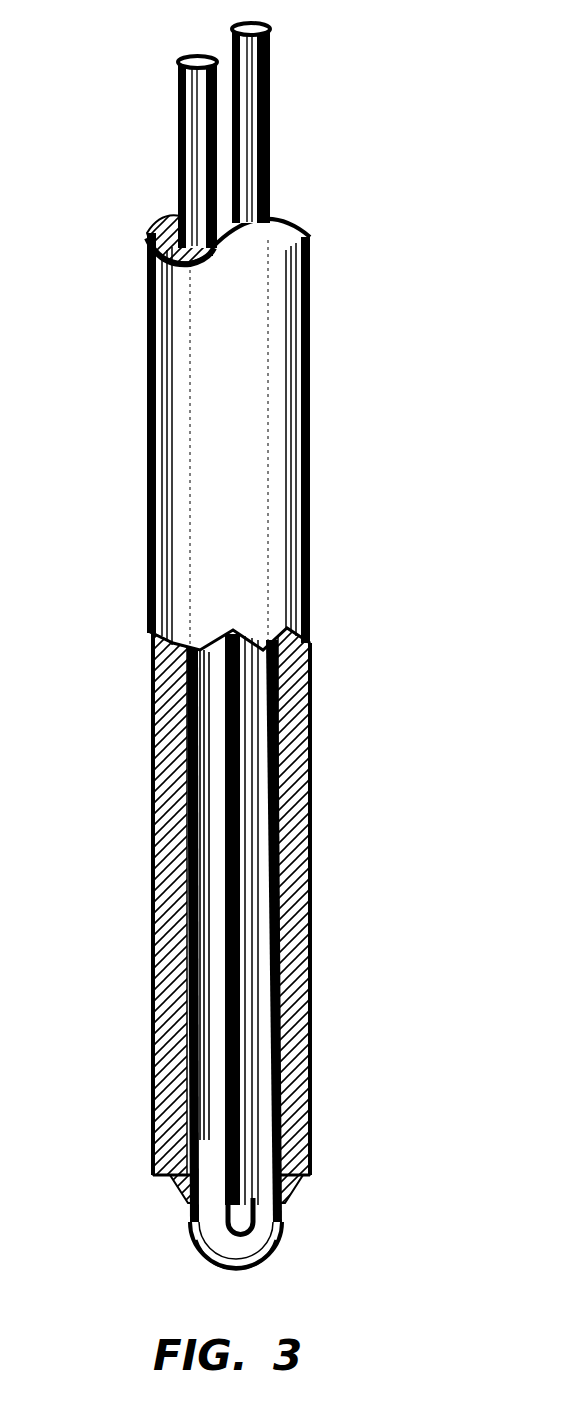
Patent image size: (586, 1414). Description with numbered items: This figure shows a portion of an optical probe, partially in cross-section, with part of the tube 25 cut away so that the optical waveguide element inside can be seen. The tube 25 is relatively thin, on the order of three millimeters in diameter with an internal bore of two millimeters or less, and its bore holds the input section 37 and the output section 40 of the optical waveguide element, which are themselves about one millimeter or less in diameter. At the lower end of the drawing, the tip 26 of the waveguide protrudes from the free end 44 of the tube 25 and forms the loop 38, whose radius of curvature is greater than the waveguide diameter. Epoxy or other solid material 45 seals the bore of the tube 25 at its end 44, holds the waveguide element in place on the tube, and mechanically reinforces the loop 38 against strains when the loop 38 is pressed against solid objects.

The tube 25 is at (150, 470).
The tip 26 is at (274, 1266).
The input section 37 is at (268, 88).
The loop 38 is at (213, 1265).
The output section 40 is at (182, 147).
The free end 44 is at (167, 1178).
The solid epoxy material 45 is at (300, 1202).